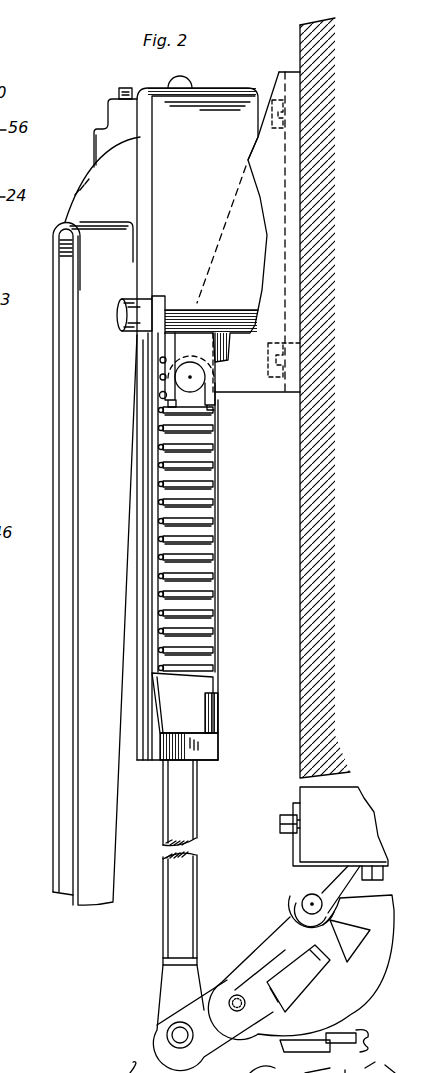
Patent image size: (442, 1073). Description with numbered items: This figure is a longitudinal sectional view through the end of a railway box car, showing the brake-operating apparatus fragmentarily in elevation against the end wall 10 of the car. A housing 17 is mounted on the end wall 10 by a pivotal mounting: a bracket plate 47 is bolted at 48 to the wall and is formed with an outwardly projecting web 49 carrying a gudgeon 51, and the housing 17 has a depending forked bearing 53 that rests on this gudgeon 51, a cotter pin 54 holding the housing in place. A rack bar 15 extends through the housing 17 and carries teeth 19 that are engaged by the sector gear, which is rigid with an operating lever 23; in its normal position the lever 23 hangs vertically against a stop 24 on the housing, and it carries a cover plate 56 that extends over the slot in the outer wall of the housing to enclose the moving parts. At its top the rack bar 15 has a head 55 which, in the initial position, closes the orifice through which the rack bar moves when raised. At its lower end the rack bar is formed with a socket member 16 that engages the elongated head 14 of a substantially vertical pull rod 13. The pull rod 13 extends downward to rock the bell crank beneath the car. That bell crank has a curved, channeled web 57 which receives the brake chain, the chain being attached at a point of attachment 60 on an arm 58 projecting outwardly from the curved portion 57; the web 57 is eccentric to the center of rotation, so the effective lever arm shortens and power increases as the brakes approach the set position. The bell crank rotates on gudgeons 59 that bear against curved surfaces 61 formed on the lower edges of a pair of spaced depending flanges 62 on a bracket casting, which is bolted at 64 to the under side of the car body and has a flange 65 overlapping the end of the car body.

The end wall 10 is at (299, 45).
The pull rod 13 is at (195, 840).
The elongated head 14 is at (197, 718).
The rack bar 15 is at (227, 663).
The socket member 16 is at (215, 734).
The housing 17 is at (117, 118).
The teeth 19 is at (204, 522).
The lever 23 is at (78, 413).
The stop 24 is at (123, 324).
The plate 47 is at (289, 67).
The bolts 48 is at (270, 103).
The web 49 is at (265, 170).
The gudgeon 51 is at (222, 395).
The forked bearings 53 is at (213, 353).
The cotter pins 54 is at (160, 396).
The head 55 is at (126, 86).
The cover plate 56 is at (118, 160).
The curved channeled web 57 is at (357, 993).
The arm 58 is at (212, 990).
The gudgeons 59 is at (298, 889).
The point of attachment 60 is at (237, 994).
The curved surfaces 61 is at (313, 893).
The depending flanges 62 is at (281, 893).
The bolts 64 is at (281, 824).
The flange 65 is at (298, 802).